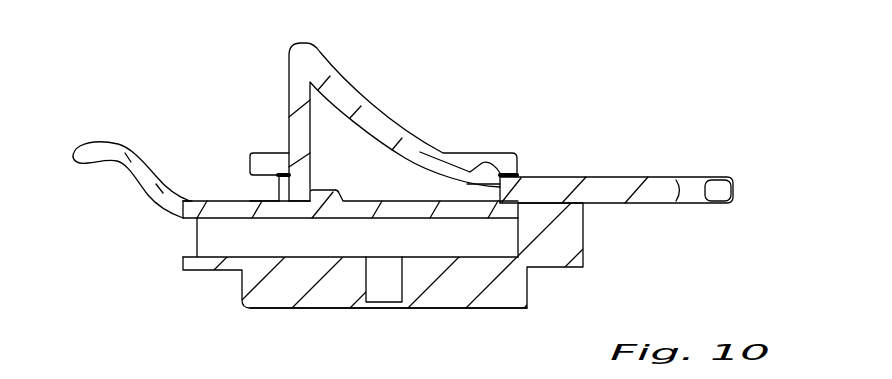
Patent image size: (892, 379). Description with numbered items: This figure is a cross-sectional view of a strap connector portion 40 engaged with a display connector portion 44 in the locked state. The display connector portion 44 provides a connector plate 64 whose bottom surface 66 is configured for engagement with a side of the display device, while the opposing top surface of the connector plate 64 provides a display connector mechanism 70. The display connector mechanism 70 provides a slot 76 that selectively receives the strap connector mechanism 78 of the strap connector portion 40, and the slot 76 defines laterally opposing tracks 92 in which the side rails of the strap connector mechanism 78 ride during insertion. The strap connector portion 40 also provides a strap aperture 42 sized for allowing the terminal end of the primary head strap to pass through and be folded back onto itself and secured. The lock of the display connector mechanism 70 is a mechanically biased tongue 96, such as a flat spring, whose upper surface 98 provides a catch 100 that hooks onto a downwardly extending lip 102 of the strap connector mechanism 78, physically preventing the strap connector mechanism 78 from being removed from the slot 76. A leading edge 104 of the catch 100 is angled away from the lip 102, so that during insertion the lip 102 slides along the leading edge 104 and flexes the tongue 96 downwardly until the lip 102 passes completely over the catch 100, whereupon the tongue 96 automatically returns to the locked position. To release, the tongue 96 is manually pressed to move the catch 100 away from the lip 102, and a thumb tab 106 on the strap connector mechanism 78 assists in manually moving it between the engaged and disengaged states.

The strap connector portion 40 is at (669, 86).
The strap aperture 42 is at (693, 172).
The display connector portion 44 is at (166, 92).
The connector plate 64 is at (513, 282).
The bottom surface 66 is at (258, 308).
The display connector mechanism 70 is at (220, 233).
The slot 76 is at (258, 191).
The strap connector mechanism 78 is at (600, 185).
The track 92 is at (273, 177).
The tongue 96 is at (104, 141).
The upper surface 98 is at (187, 200).
The catch 100 is at (320, 192).
The lip 102 is at (300, 192).
The leading edge 104 is at (340, 192).
The thumb tab 106 is at (317, 52).